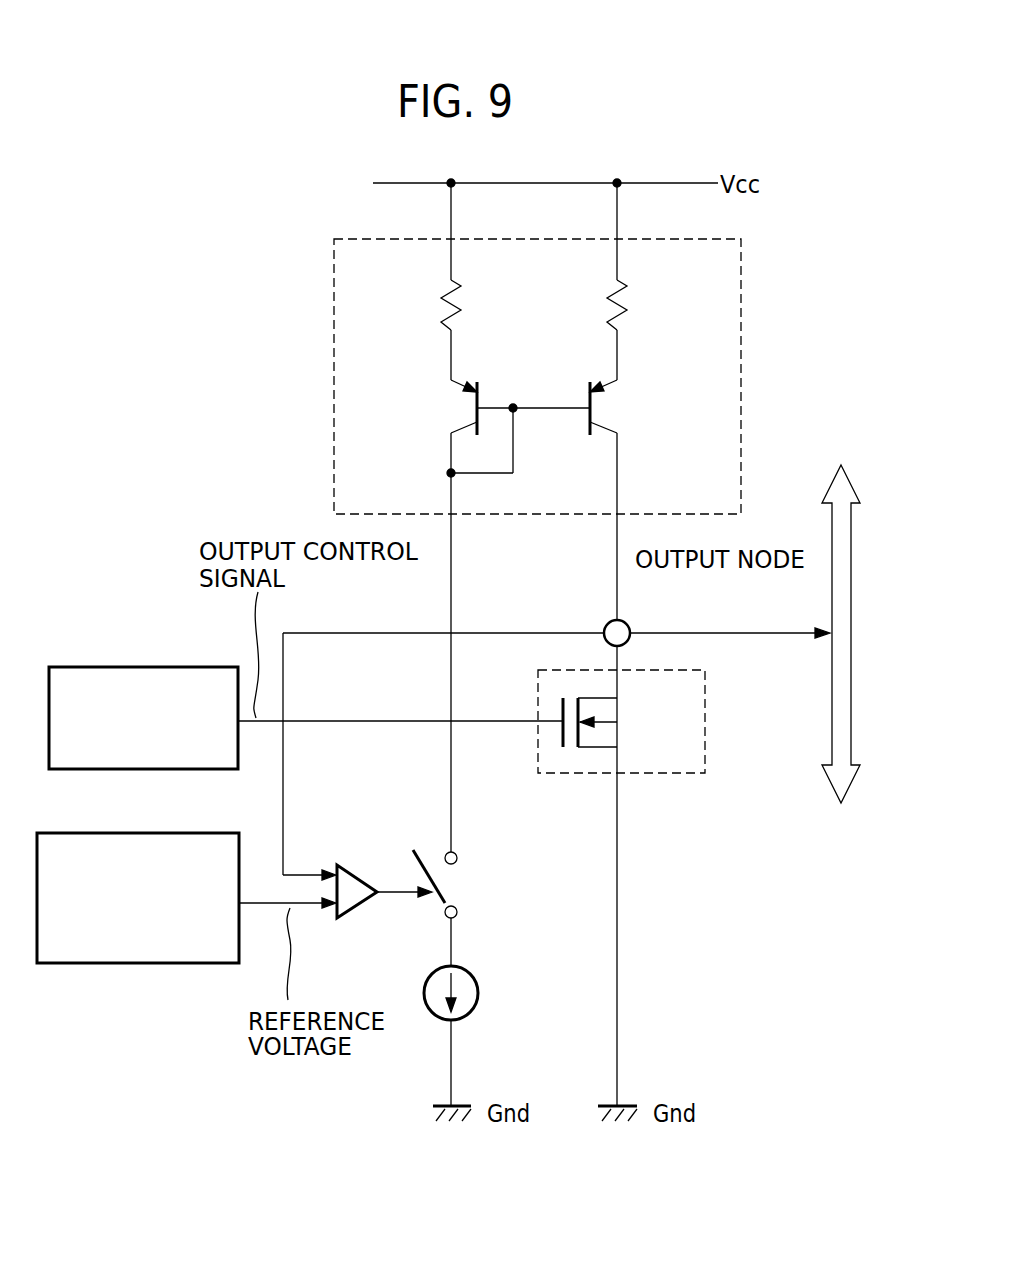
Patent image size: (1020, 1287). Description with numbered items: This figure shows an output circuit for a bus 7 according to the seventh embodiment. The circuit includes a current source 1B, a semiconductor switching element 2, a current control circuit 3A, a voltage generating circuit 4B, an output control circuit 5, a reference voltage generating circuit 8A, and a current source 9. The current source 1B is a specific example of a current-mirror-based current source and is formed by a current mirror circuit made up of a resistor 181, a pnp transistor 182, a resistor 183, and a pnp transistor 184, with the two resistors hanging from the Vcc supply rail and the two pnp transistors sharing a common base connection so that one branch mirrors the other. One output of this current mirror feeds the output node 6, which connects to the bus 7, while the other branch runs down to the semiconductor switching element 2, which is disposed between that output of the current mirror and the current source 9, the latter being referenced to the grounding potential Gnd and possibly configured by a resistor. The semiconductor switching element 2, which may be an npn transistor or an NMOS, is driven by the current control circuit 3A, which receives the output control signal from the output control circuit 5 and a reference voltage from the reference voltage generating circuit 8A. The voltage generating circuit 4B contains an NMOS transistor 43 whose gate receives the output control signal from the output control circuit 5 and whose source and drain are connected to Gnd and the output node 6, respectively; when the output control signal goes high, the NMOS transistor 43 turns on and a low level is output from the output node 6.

The current source 1B is at (741, 330).
The resistor 181 is at (628, 305).
The pnp transistor 182 is at (615, 408).
The resistor 183 is at (461, 305).
The pnp transistor 184 is at (450, 412).
The output control circuit 5 is at (103, 666).
The output node 6 is at (627, 620).
The NMOS transistor 43 is at (620, 712).
The voltage generating circuit 4B is at (660, 774).
The bus 7 is at (840, 654).
The current control circuit 3A is at (358, 868).
The semiconductor switching element 2 is at (462, 884).
The current source 9 is at (480, 992).
The reference voltage generating circuit 8A is at (128, 965).